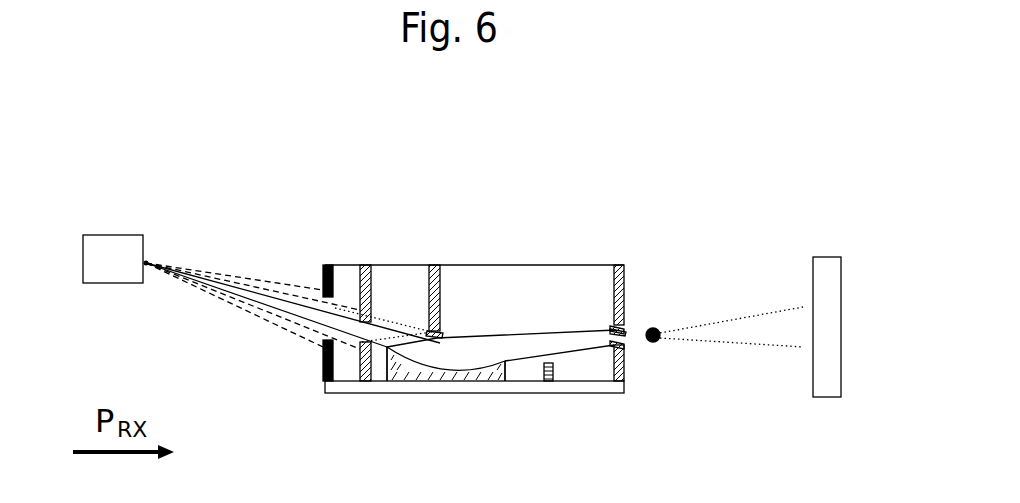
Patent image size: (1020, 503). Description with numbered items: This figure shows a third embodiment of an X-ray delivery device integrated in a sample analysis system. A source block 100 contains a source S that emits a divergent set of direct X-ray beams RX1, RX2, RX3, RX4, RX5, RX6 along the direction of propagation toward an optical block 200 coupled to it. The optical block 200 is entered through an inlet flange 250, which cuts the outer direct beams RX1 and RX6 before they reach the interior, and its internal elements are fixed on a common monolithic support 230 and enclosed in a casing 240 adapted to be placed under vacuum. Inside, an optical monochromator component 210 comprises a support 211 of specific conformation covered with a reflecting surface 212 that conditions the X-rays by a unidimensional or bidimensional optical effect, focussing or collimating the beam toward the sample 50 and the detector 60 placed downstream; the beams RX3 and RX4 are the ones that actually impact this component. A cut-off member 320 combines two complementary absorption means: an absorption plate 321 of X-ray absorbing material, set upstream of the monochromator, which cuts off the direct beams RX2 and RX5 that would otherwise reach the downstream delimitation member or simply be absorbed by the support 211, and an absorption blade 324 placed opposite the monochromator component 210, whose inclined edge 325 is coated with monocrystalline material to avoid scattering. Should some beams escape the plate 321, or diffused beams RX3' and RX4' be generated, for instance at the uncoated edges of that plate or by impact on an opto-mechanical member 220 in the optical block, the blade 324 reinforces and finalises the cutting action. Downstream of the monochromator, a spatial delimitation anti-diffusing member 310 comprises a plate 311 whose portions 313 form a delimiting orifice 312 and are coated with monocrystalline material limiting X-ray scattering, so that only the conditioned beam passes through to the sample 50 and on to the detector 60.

The source block 100 is at (103, 212).
The direct X-ray beam RX1 is at (203, 273).
The direct X-ray beam RX2 is at (256, 290).
The direct X-ray beam RX3 is at (293, 279).
The direct X-ray beam RX4 is at (263, 305).
The direct X-ray beam RX5 is at (278, 318).
The direct X-ray beam RX6 is at (290, 333).
The diffused X-ray beam RX3' is at (379, 260).
The diffused X-ray beam RX4' is at (403, 278).
The optical block 200 is at (468, 304).
The casing 240 is at (543, 270).
The monolithic support 230 is at (607, 388).
The inlet flange 250 is at (323, 380).
The cut-off member 320 is at (411, 296).
The absorption plate 321 is at (362, 382).
The absorption blade 324 is at (440, 266).
The inclined edge 325 is at (443, 331).
The optical monochromator component 210 is at (438, 406).
The support 211 is at (403, 383).
The reflecting surface 212 is at (477, 383).
The opto-mechanical member 220 is at (549, 383).
The anti-diffusing member 310 is at (681, 301).
The plate 311 is at (618, 327).
The portions 313 is at (627, 331).
The delimiting orifice 312 is at (622, 343).
The sample 50 is at (659, 341).
The detector 60 is at (825, 268).